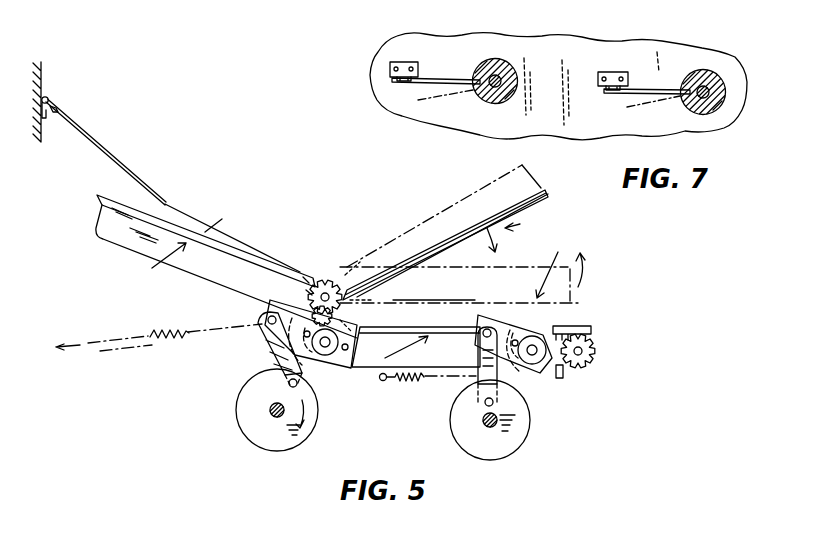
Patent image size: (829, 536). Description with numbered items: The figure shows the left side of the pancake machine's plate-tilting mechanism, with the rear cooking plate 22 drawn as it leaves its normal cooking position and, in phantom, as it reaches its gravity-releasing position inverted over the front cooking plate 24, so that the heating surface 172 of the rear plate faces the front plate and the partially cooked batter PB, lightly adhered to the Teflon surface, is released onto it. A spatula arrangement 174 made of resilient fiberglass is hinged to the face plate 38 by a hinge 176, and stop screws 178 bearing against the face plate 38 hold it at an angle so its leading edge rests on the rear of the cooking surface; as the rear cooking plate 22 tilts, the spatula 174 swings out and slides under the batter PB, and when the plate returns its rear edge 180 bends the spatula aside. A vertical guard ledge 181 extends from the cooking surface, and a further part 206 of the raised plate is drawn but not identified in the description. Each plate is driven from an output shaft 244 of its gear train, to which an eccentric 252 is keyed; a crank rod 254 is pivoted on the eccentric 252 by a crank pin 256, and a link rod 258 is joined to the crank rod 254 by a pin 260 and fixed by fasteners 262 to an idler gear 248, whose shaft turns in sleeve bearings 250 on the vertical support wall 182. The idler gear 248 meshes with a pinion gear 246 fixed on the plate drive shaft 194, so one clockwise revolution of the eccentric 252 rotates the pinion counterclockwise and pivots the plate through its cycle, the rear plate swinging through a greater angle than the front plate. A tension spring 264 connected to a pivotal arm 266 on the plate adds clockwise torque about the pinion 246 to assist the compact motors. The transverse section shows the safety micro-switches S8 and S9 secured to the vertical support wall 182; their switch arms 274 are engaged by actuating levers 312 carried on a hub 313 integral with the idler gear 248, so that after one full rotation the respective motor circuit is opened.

In FIG. 5, the face plate 38 is at (44, 72).
In FIG. 5, the hinge 176 is at (47, 98).
In FIG. 5, the stop screws 178 is at (58, 108).
In FIG. 5, the spatula arrangement 174 is at (112, 164).
In FIG. 5, the rear edge 180 is at (100, 193).
In FIG. 5, the heating surface 172 is at (140, 207).
In FIG. 5, the rear cooking plate 22 is at (152, 268).
In FIG. 5, the partially cooked batter PB is at (535, 217).
In FIG. 5, the arm member 206 is at (347, 280).
In FIG. 5, the vertical guard ledge 181 is at (330, 278).
In FIG. 5, the drive shaft 194 is at (318, 282).
In FIG. 5, the pivotal arm 266 is at (300, 276).
In FIG. 5, the pinion gear 246 is at (595, 345).
In FIG. 5, the idler gear 248 is at (398, 318).
In FIG. 5, the fasteners 262 is at (360, 333).
In FIG. 5, the front cooking plate 24 is at (397, 351).
In FIG. 5, the link rod 258 is at (288, 300).
In FIG. 5, the sleeve bearings 250 is at (330, 375).
In FIG. 5, the pin 260 is at (268, 318).
In FIG. 5, the crank rod 254 is at (262, 348).
In FIG. 5, the eccentric 252 is at (244, 392).
In FIG. 5, the crank pin 256 is at (289, 384).
In FIG. 5, the output shaft 244 is at (274, 412).
In FIG. 7, the output shaft 244 is at (498, 77).
In FIG. 5, the tension spring 264 is at (168, 344).
In FIG. 7, the vertical support wall 182 is at (598, 42).
In FIG. 7, the safety micro-switch S8 is at (404, 63).
In FIG. 7, the safety micro-switch S9 is at (611, 70).
In FIG. 7, the actuating lever 312 is at (452, 76).
In FIG. 7, the hub 313 is at (517, 72).
In FIG. 7, the switch arm 274 is at (410, 86).